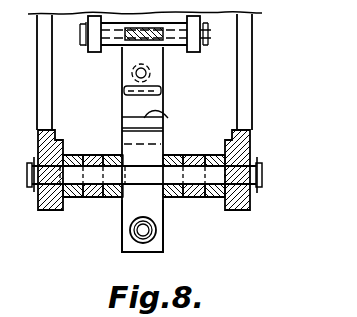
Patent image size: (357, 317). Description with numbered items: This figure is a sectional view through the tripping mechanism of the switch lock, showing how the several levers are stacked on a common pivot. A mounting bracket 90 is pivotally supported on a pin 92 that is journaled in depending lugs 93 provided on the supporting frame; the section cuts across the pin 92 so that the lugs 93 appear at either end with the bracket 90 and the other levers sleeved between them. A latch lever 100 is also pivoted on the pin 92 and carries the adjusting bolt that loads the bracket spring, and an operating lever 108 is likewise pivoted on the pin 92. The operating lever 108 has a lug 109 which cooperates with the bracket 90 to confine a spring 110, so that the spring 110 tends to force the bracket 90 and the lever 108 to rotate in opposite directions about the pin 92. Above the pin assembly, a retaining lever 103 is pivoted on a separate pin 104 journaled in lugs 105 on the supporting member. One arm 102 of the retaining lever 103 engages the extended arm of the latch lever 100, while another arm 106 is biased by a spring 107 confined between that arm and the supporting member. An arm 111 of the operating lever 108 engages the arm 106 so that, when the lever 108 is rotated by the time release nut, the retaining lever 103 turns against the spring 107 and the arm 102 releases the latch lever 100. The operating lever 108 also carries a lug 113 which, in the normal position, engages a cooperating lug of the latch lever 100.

The mounting bracket 90 is at (80, 198).
The pin 92 is at (262, 172).
The depending lugs 93 is at (48, 210).
The latch lever 100 is at (188, 156).
The arm of retaining lever 102 is at (124, 44).
The retaining lever 103 is at (104, 47).
The pin 104 is at (210, 34).
The lugs 105 is at (94, 52).
The arm of retaining lever 106 is at (160, 62).
The spring 107 is at (166, 82).
The operating lever 108 is at (98, 155).
The lug 109 is at (163, 238).
The spring 110 is at (128, 234).
The arm of operating lever 111 is at (121, 98).
The lug 113 is at (170, 118).